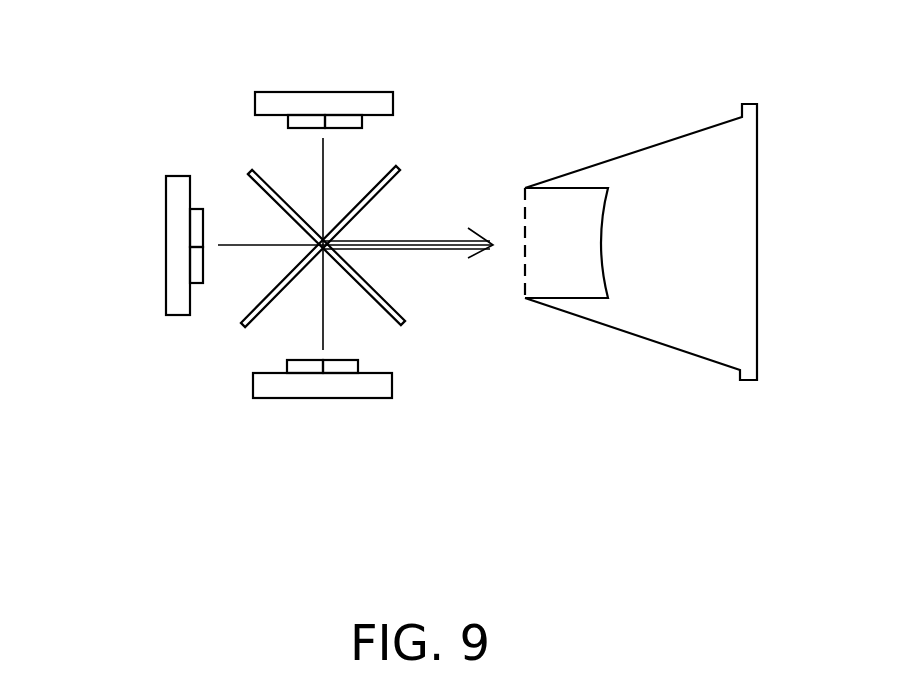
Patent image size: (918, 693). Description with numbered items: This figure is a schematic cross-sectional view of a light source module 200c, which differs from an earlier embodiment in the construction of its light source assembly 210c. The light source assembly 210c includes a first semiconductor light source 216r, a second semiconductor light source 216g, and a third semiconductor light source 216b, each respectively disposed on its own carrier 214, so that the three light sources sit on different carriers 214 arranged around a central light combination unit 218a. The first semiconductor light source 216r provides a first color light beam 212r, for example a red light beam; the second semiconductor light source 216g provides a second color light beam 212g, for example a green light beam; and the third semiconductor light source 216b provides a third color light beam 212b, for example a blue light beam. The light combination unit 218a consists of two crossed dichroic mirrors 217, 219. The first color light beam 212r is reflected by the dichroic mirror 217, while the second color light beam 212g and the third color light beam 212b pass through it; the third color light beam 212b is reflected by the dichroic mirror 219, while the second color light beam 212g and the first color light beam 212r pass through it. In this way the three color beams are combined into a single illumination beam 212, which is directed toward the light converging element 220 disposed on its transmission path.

The light source module 200c is at (752, 563).
The light source assembly 210c is at (428, 442).
The illumination beam 212 is at (428, 212).
The second color light beam 212g is at (265, 243).
The third color light beam 212b is at (325, 180).
The first color light beam 212r is at (323, 338).
The carrier 214 is at (387, 105).
The third semiconductor light source 216b is at (302, 120).
The second semiconductor light source 216g is at (197, 223).
The first semiconductor light source 216r is at (298, 368).
The dichroic mirror 217 is at (252, 309).
The dichroic mirror 219 is at (367, 292).
The light combination unit 218a is at (244, 288).
The light converging element 220 is at (670, 335).